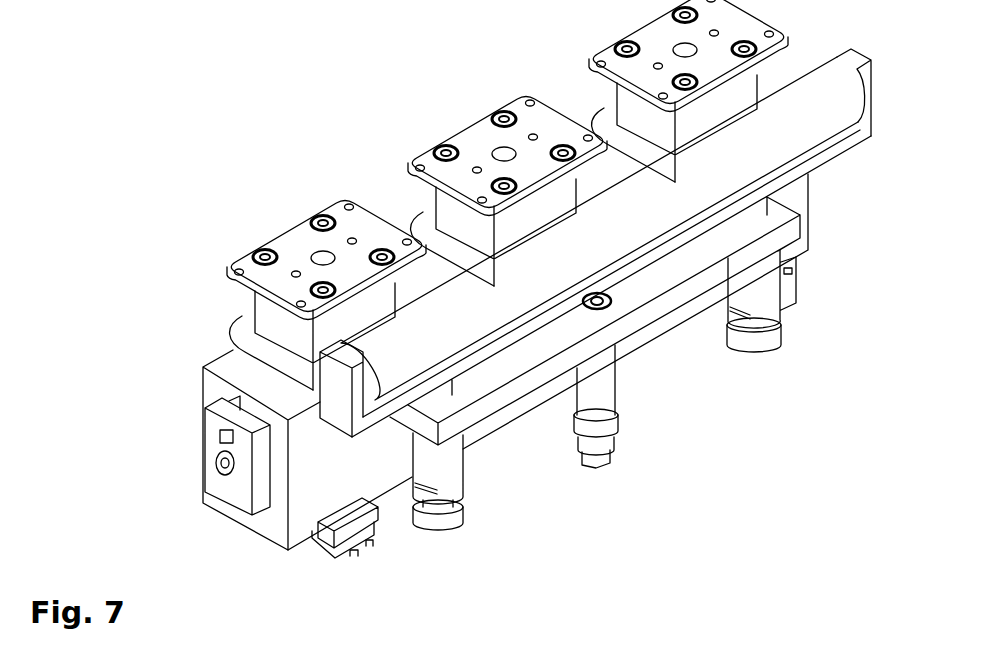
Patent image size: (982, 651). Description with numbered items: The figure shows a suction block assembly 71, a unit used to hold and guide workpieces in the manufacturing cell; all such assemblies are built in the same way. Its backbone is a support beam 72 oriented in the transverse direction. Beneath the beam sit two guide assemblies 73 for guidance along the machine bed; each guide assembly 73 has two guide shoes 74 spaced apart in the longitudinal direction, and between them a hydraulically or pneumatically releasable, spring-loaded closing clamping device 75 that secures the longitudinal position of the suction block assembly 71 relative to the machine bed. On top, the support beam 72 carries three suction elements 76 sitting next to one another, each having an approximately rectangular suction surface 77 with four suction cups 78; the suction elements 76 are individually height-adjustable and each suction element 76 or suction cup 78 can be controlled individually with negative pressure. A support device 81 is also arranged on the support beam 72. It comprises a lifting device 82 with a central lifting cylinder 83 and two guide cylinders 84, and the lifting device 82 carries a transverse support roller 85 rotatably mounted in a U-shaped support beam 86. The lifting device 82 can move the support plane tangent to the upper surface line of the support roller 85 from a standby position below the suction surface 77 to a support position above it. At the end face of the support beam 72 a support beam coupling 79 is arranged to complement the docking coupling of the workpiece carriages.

The suction block assembly 71 is at (352, 180).
The support beam 72 is at (270, 525).
The guide assembly 73 is at (317, 552).
The guide shoe 74 is at (348, 553).
The clamping device 75 is at (312, 538).
The suction element 76 is at (263, 322).
The suction surface 77 is at (295, 237).
The suction cup 78 is at (447, 148).
The support beam coupling 79 is at (227, 463).
The support device 81 is at (473, 520).
The lifting device 82 is at (567, 450).
The lifting cylinder 83 is at (590, 408).
The guide cylinder 84 is at (747, 292).
The support roller 85 is at (433, 312).
The U-shaped support beam 86 is at (507, 342).